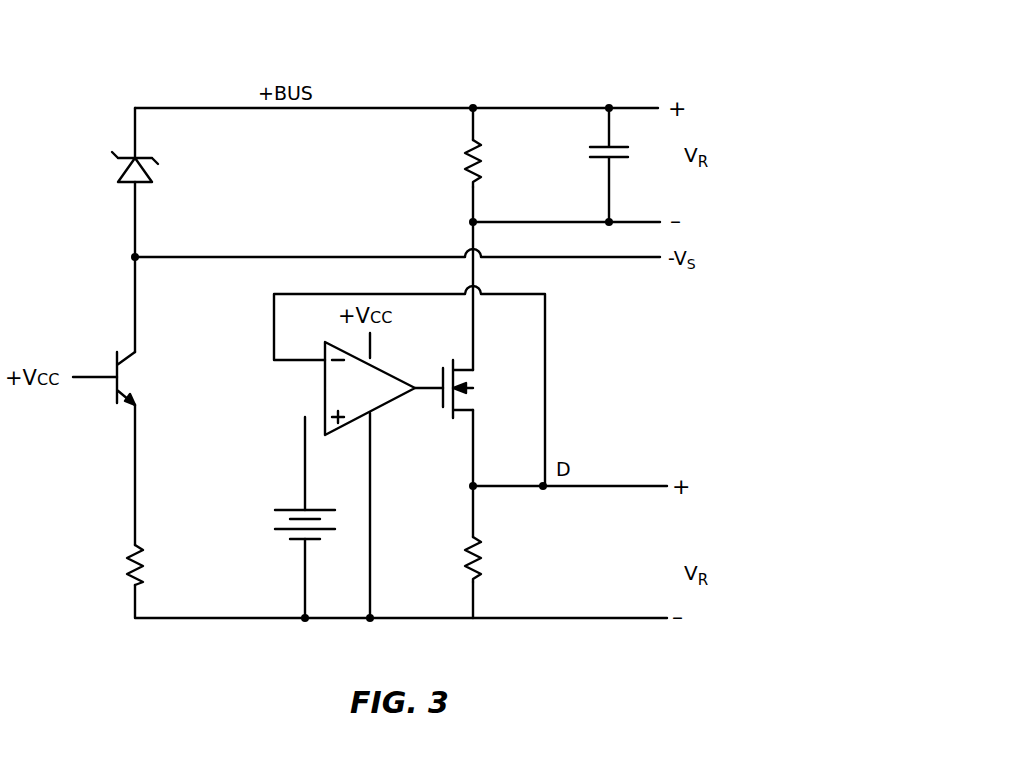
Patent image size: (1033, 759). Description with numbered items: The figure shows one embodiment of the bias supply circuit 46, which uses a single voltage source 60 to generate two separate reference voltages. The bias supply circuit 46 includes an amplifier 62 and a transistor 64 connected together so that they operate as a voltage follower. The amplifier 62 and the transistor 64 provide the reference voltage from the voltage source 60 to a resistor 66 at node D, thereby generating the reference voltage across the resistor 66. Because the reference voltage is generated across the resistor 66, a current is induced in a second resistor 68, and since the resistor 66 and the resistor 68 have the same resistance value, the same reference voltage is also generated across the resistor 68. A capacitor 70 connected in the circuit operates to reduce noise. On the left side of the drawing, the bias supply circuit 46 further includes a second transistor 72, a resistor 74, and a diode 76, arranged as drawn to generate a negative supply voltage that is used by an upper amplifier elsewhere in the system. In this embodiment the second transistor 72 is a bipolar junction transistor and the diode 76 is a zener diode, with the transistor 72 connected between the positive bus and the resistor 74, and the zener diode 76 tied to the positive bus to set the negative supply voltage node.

The bias supply circuit 46 is at (515, 70).
The voltage source 60 is at (293, 510).
The amplifier 62 is at (385, 405).
The transistor 64 is at (440, 381).
The resistor 66 is at (484, 565).
The resistor 68 is at (484, 158).
The capacitor 70 is at (618, 160).
The second transistor 72 is at (117, 356).
The resistor 74 is at (140, 584).
The diode 76 is at (148, 172).